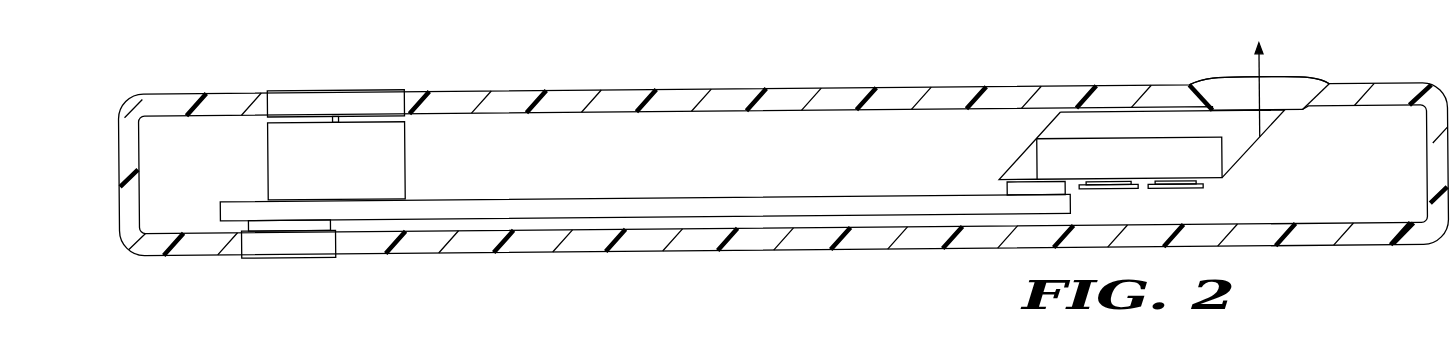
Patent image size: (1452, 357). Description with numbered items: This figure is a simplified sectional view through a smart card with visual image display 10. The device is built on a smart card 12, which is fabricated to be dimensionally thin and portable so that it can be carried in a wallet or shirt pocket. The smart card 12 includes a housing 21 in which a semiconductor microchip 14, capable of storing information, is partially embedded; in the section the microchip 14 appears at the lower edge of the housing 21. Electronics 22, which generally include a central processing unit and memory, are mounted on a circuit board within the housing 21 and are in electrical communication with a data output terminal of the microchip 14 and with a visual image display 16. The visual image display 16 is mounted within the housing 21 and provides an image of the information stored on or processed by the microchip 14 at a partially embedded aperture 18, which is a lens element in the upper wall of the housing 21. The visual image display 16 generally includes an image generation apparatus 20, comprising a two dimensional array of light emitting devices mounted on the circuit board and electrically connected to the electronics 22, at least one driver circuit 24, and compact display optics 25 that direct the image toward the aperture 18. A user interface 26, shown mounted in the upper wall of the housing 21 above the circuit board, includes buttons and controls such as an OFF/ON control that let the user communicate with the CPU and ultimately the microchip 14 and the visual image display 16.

The smart card with visual image display 10 is at (933, 309).
The smart card 12 is at (560, 278).
The semiconductor microchip 14 is at (285, 253).
The visual image display 16 is at (1286, 153).
The aperture 18 is at (1306, 74).
The image generation apparatus 20 is at (1003, 189).
The housing 21 is at (793, 88).
The electronics 22 is at (648, 197).
The driver circuit 24 is at (1200, 192).
The display optics 25 is at (1221, 83).
The user interface 26 is at (302, 87).